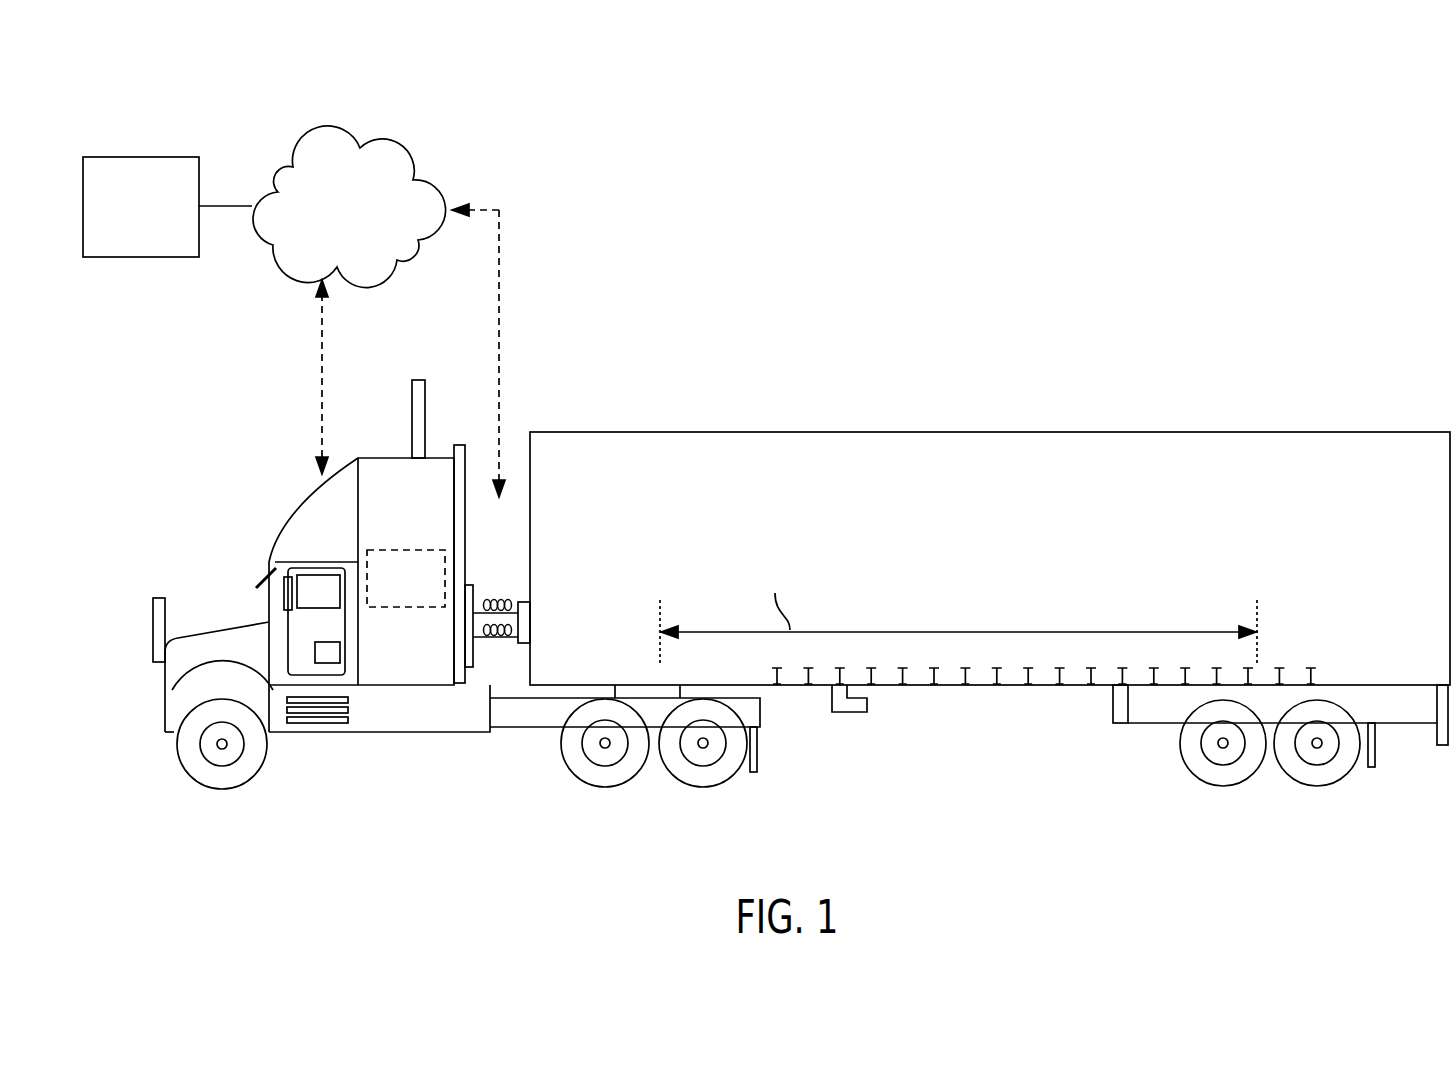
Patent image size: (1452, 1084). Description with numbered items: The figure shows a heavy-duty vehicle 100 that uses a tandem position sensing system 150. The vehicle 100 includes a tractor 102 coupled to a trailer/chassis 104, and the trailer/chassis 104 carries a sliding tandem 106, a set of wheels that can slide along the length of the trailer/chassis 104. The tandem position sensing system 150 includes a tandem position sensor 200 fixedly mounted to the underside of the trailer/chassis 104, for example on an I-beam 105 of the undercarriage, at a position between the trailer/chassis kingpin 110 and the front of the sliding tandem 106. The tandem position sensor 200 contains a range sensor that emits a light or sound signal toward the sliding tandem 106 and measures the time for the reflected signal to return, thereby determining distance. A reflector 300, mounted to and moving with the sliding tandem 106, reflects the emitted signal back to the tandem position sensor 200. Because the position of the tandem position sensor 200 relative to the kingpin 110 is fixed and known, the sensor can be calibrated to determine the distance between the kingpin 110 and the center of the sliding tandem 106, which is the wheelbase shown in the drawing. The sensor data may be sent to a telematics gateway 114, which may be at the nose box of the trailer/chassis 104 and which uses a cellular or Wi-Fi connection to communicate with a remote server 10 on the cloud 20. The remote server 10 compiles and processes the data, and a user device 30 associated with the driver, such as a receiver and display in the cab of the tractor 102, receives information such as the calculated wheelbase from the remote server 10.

The remote server 10 is at (142, 157).
The cloud 20 is at (290, 170).
The user device 30 is at (408, 550).
The heavy-duty vehicle 100 is at (1368, 308).
The tractor 102 is at (220, 623).
The trailer/chassis 104 is at (778, 432).
The I-beam 105 is at (840, 667).
The sliding tandem 106 is at (1113, 787).
The trailer/chassis kingpin 110 is at (634, 676).
The telematics gateway 114 is at (521, 600).
The tandem position sensing system 150 is at (971, 775).
The tandem position sensor 200 is at (843, 713).
The reflector 300 is at (1120, 703).